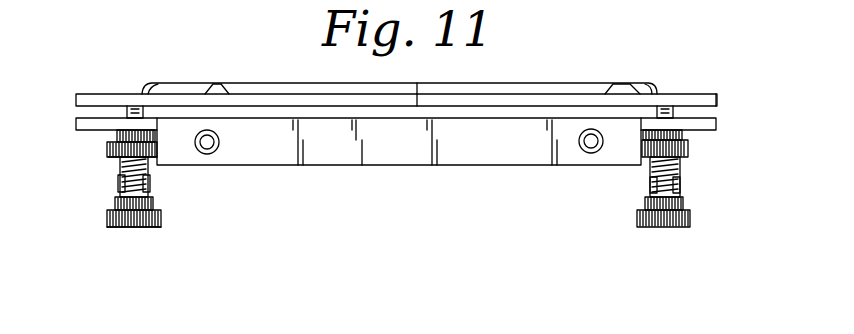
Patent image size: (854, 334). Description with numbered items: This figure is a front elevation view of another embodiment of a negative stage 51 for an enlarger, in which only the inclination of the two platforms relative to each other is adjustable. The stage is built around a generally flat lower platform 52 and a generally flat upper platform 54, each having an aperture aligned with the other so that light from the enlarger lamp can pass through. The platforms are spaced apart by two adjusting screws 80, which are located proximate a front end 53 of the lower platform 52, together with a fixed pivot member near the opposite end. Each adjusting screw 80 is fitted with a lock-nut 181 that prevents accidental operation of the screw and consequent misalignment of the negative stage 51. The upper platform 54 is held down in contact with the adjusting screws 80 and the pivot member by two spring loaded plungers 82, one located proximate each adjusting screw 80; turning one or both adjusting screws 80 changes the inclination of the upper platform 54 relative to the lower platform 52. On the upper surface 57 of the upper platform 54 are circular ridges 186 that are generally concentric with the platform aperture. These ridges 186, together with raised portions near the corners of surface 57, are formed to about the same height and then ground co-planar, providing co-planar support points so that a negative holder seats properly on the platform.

The negative stage 51 is at (123, 255).
The lower platform 52 is at (703, 122).
The front end 53 is at (257, 120).
The upper platform 54 is at (721, 100).
The upper surface 57 is at (719, 93).
The adjusting screw 80 is at (150, 187).
The spring loaded plunger 82 is at (115, 184).
The lock-nut 181 is at (690, 150).
The circular ridge 186 is at (143, 84).